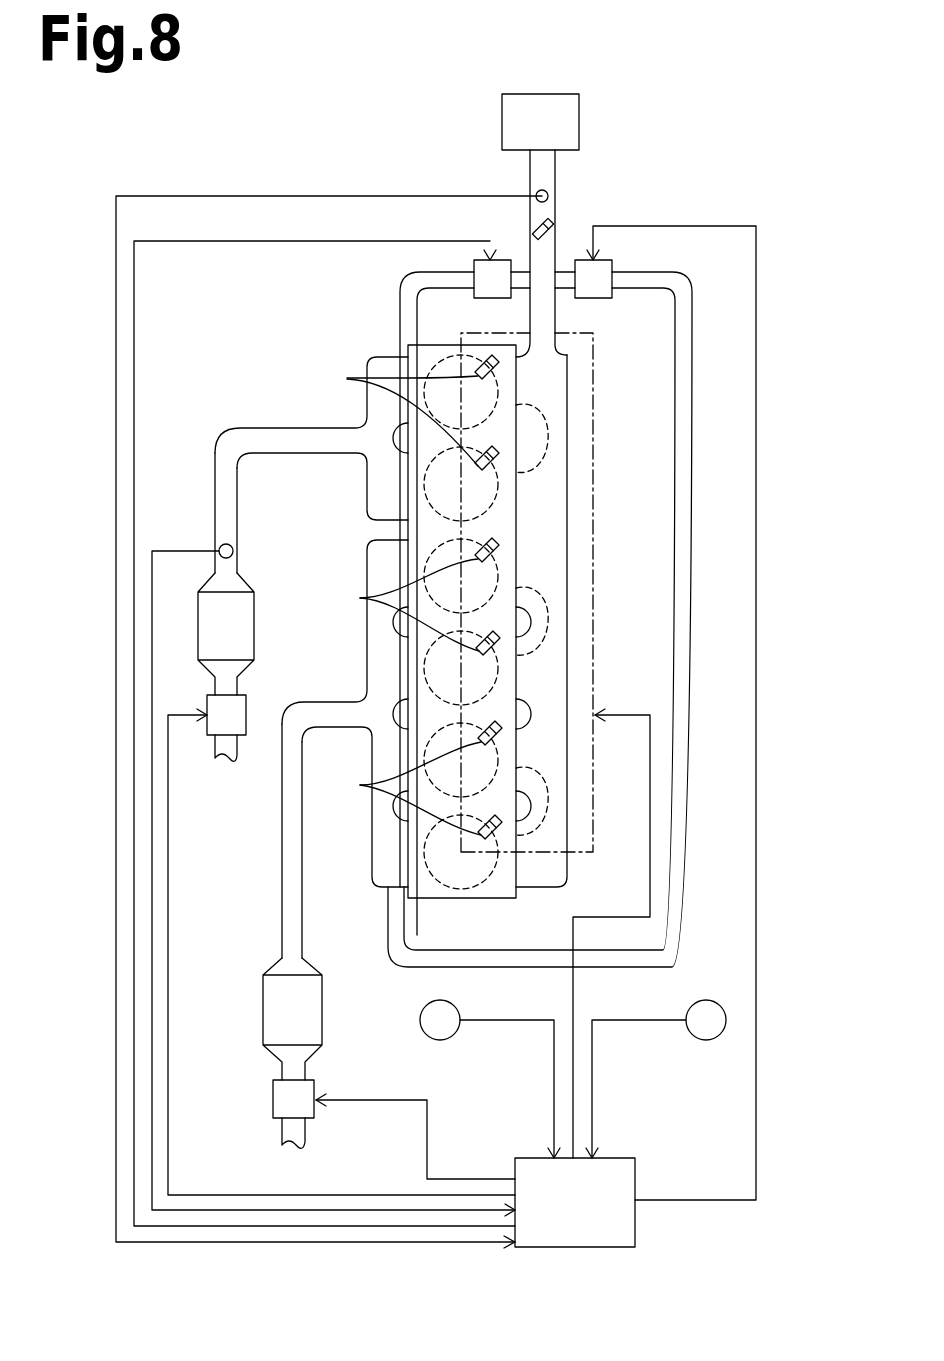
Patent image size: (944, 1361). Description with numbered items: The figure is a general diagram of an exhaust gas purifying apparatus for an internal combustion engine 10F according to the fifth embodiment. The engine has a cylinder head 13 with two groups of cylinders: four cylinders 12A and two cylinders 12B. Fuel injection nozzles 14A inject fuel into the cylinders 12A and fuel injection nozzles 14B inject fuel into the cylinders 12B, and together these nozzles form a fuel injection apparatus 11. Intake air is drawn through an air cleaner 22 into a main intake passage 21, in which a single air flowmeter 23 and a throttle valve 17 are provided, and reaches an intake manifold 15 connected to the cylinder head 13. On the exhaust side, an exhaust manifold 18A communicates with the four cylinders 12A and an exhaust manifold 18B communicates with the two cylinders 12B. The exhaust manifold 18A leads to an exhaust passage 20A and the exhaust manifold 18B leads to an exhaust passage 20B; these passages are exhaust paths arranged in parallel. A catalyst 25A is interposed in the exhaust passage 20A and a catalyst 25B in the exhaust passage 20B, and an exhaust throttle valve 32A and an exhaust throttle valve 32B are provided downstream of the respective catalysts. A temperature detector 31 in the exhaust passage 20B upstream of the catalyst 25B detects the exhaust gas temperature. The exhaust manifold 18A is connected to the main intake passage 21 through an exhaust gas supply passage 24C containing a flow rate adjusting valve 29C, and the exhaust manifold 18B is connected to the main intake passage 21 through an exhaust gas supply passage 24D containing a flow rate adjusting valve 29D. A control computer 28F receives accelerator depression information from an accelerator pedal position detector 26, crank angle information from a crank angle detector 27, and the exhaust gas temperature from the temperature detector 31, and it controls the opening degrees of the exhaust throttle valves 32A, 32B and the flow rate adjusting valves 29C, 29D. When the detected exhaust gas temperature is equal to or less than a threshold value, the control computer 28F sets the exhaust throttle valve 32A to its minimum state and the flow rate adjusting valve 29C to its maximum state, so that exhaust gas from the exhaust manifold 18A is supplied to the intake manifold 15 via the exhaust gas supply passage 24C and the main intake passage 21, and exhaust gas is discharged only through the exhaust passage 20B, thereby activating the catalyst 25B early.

The internal combustion engine 10F is at (285, 175).
The fuel injection apparatus 11 is at (596, 860).
The cylinders 12A is at (543, 695).
The cylinders 12B is at (543, 421).
The cylinder head 13 is at (436, 345).
The fuel injection nozzles 14A is at (409, 688).
The fuel injection nozzles 14B is at (400, 412).
The intake manifold 15 is at (562, 830).
The throttle valve 17 is at (533, 228).
The exhaust manifold 18A is at (376, 823).
The exhaust manifold 18B is at (377, 494).
The exhaust passage 20A is at (302, 911).
The exhaust passage 20B is at (228, 486).
The main intake passage 21 is at (530, 166).
The air cleaner 22 is at (572, 118).
The air flowmeter 23 is at (549, 195).
The exhaust gas supply passage 24C is at (690, 552).
The exhaust gas supply passage 24D is at (400, 322).
The catalyst 25A is at (263, 998).
The catalyst 25B is at (254, 641).
The accelerator pedal position detector 26 is at (446, 1033).
The crank angle detector 27 is at (700, 1033).
The control computer 28F is at (572, 1248).
The flow rate adjusting valve 29C is at (600, 298).
The flow rate adjusting valve 29D is at (504, 291).
The temperature detector 31 is at (233, 551).
The exhaust throttle valve 32A is at (272, 1100).
The exhaust throttle valve 32B is at (246, 700).